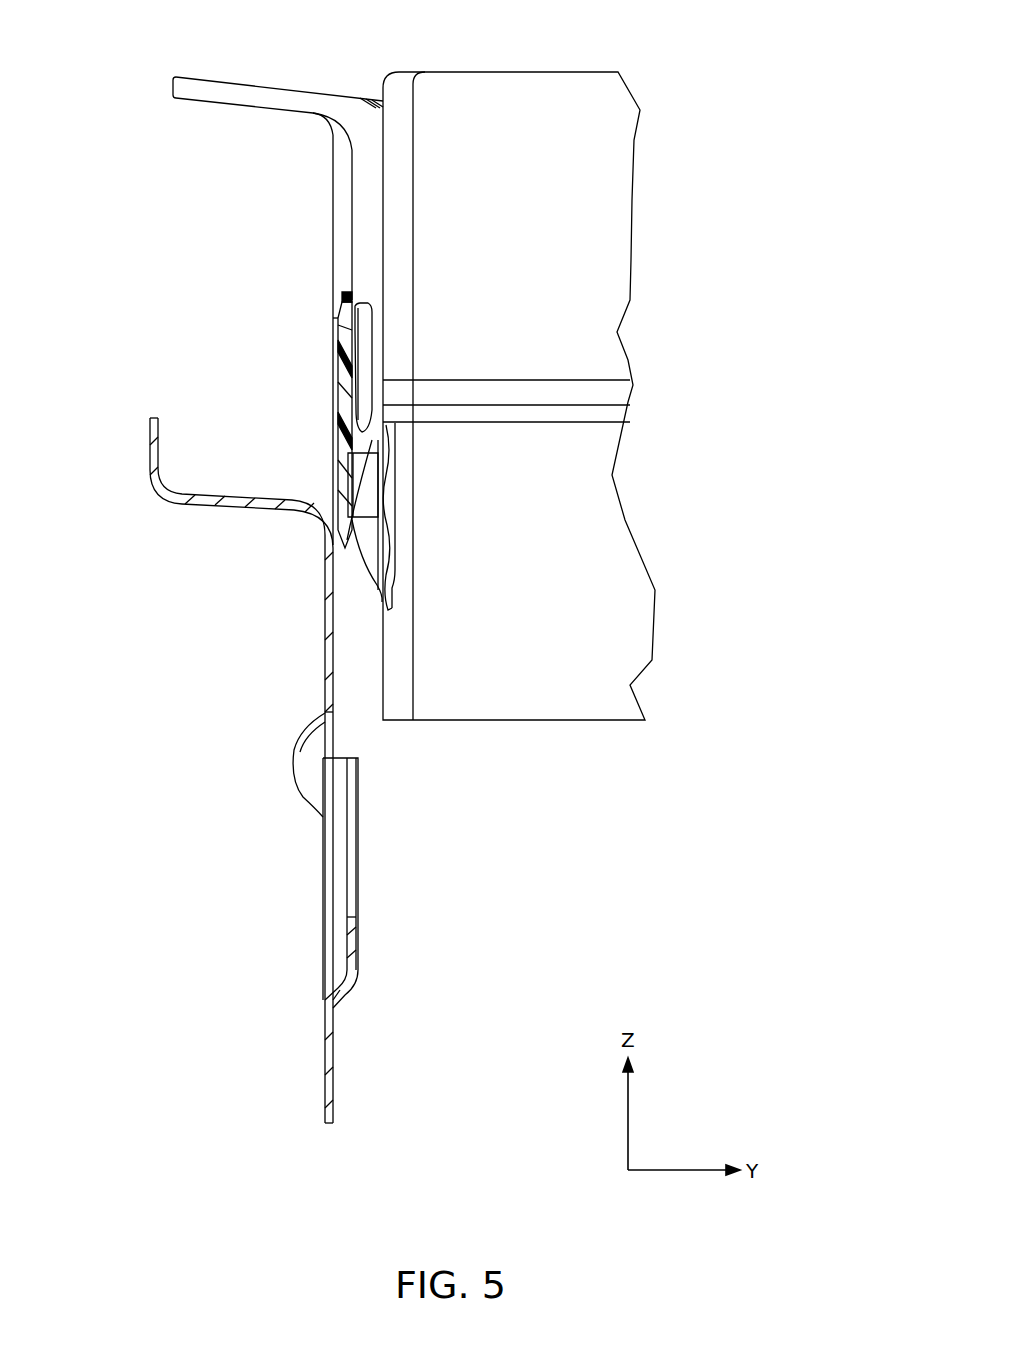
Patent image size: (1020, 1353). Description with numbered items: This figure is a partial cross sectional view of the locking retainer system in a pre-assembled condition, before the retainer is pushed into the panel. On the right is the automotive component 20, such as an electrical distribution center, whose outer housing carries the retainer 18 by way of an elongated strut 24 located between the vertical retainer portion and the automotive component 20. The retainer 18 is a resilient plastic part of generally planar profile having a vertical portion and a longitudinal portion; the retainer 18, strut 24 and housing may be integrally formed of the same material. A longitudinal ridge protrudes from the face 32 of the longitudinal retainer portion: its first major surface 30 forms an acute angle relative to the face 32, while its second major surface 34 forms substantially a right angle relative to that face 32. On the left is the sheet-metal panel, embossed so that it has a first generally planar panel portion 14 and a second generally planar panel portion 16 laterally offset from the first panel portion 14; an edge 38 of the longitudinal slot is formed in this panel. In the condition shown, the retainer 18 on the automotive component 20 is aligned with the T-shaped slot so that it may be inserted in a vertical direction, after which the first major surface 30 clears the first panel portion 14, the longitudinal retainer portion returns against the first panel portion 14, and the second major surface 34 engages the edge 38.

The first generally planar panel portion 14 is at (330, 652).
The second generally planar panel portion 16 is at (356, 903).
The retainer 18 is at (258, 343).
The automotive component 20 is at (634, 56).
The elongated strut 24 is at (347, 540).
The first major surface 30 is at (332, 318).
The face 32 is at (333, 365).
The second major surface 34 is at (343, 300).
The edge 38 is at (323, 713).